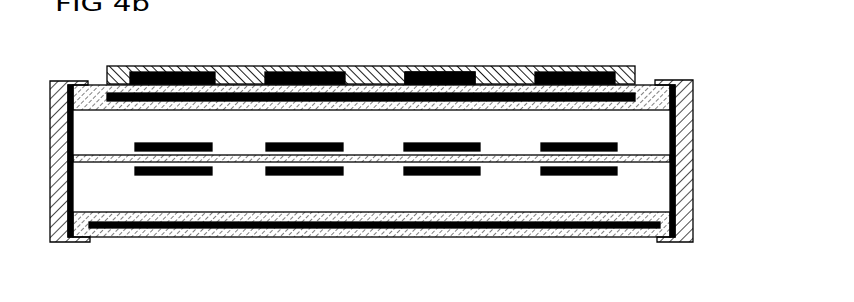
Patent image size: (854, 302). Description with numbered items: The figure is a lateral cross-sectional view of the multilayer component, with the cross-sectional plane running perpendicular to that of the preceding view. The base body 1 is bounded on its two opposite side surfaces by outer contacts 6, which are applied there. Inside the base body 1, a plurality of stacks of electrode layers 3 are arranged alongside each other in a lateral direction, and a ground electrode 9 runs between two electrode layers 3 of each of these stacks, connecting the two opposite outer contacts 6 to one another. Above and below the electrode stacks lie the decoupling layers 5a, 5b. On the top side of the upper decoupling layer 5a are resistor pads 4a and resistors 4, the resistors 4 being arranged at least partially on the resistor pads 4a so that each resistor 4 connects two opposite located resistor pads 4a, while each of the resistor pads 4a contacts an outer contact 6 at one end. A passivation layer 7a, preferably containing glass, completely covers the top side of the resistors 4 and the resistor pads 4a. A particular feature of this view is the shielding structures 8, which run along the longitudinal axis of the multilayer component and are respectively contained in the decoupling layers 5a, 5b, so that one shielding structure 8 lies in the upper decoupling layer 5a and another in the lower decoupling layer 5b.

The base body 1 is at (374, 154).
The electrode layers 3 is at (555, 147).
The resistors 4 is at (433, 73).
The resistor pads 4a is at (472, 82).
The decoupling layer 5a is at (100, 92).
The decoupling layer 5b is at (572, 237).
The outer contacts 6 is at (52, 193).
The passivation layer 7a is at (242, 80).
The shielding structures 8 is at (625, 92).
The ground electrode 9 is at (664, 159).